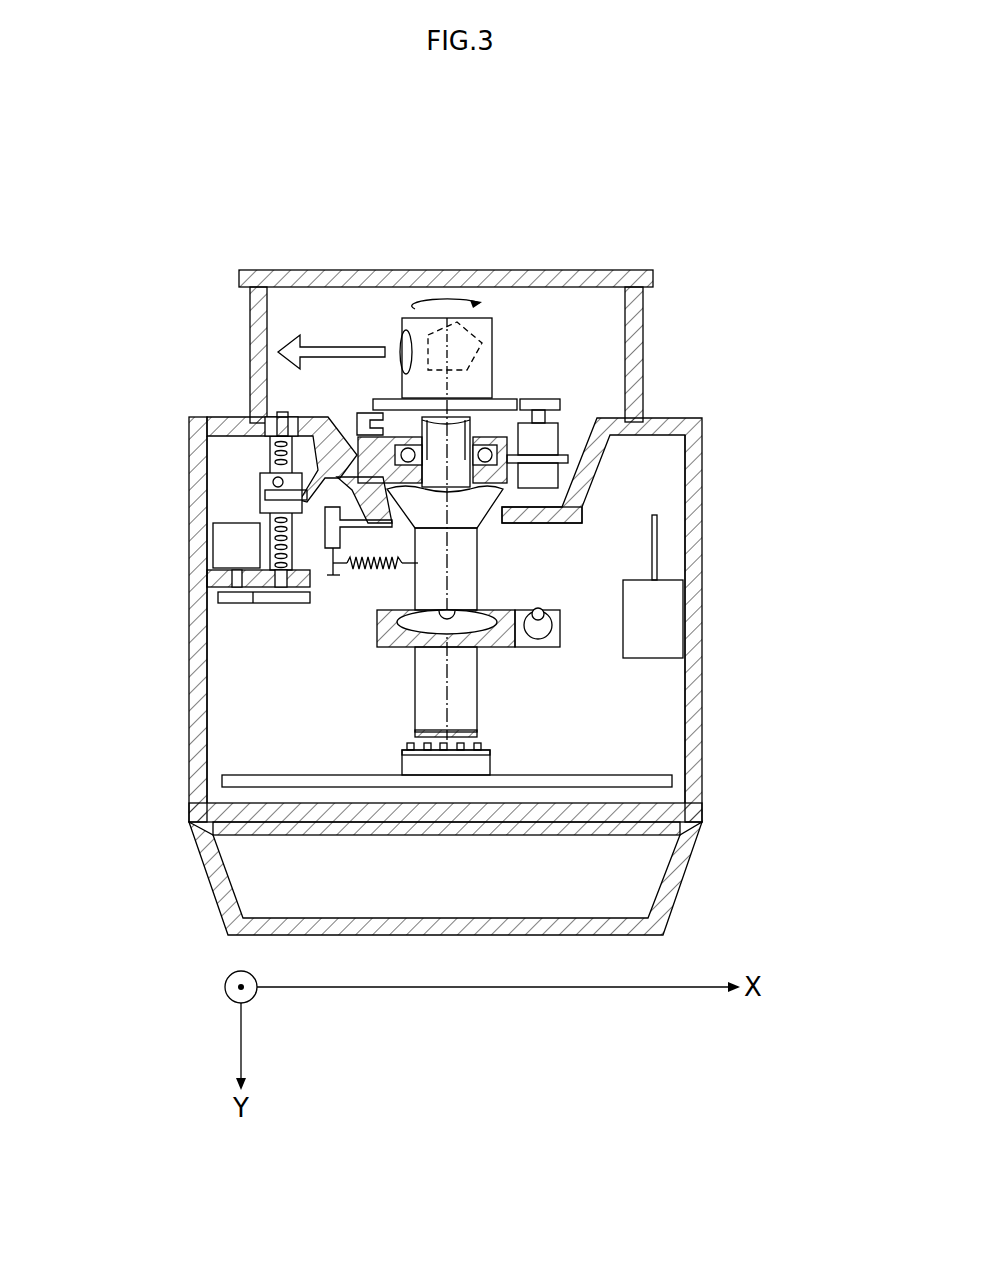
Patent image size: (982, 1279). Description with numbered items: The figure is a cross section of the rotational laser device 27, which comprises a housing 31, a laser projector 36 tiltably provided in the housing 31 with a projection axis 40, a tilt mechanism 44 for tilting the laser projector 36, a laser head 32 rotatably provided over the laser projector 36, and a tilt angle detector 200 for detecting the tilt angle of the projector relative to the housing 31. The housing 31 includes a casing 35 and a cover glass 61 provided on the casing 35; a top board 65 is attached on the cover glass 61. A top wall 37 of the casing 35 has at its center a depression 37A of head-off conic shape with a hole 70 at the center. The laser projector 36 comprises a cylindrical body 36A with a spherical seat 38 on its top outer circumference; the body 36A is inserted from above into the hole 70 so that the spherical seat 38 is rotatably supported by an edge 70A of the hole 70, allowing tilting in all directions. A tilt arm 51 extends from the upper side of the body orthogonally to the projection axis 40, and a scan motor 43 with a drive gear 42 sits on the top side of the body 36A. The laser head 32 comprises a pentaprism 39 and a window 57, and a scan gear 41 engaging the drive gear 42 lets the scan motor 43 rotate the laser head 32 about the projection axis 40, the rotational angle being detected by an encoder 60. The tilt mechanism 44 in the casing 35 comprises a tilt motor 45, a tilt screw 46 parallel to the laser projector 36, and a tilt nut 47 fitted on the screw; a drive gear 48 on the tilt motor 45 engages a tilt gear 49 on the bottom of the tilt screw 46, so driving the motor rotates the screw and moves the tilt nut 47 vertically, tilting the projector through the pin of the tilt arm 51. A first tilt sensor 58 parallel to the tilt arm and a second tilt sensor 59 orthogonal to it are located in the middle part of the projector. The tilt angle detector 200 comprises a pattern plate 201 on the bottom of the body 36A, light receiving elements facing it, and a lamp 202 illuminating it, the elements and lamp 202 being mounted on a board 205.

The rotational laser device 27 is at (773, 347).
The housing 31 is at (737, 620).
The laser head 32 is at (495, 332).
The casing 35 is at (600, 418).
The laser projector 36 is at (482, 563).
The cylindrical body 36A is at (420, 585).
The top wall 37 is at (207, 418).
The depression 37A is at (545, 507).
The spherical seat 38 is at (488, 518).
The pentaprism 39 is at (488, 327).
The projection axis 40 is at (437, 582).
The scan gear 41 is at (502, 410).
The drive gear 42 is at (540, 405).
The scan motor 43 is at (545, 435).
The tilt mechanism 44 is at (238, 508).
The tilt motor 45 is at (230, 550).
The tilt screw 46 is at (253, 452).
The tilt nut 47 is at (257, 478).
The drive gear 48 is at (220, 588).
The tilt gear 49 is at (277, 607).
The tilt arm 51 is at (278, 413).
The window 57 is at (400, 345).
The first tilt sensor 58 is at (483, 630).
The second tilt sensor 59 is at (540, 630).
The encoder 60 is at (373, 413).
The cover glass 61 is at (250, 312).
The top board 65 is at (578, 270).
The hole 70 is at (398, 523).
The edge 70A is at (500, 533).
The tilt angle detector 200 is at (360, 788).
The pattern plate 201 is at (457, 732).
The lamp 202 is at (443, 755).
The board 205 is at (420, 775).